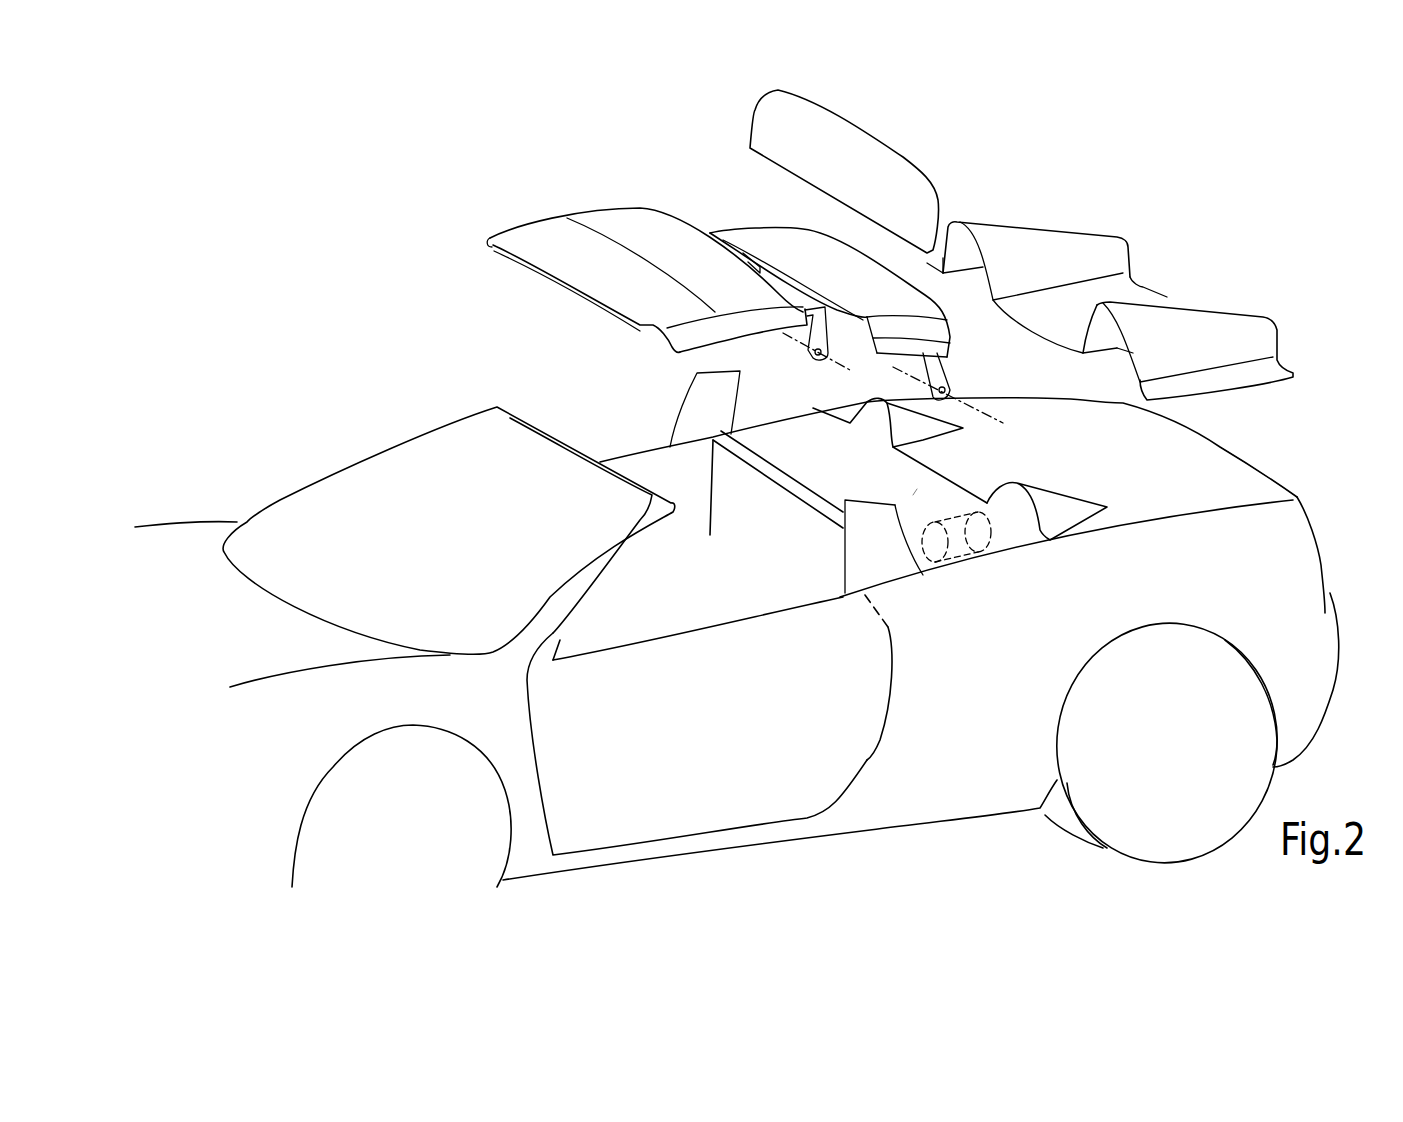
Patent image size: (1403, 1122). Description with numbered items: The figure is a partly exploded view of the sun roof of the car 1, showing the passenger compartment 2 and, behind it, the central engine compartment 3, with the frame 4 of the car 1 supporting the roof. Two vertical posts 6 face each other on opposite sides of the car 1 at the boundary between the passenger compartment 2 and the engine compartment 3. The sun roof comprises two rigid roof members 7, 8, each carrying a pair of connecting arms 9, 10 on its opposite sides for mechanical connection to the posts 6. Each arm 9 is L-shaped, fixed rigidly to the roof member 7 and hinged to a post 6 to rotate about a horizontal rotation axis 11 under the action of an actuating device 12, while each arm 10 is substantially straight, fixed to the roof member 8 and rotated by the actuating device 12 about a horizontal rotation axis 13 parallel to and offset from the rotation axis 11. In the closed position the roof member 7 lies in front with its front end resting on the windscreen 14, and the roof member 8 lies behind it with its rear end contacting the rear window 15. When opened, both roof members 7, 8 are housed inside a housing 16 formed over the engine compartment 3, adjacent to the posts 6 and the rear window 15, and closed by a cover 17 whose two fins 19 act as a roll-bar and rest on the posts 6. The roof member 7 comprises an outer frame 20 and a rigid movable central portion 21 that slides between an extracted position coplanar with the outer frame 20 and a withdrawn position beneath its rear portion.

The car 1 is at (337, 332).
The passenger compartment 2 is at (487, 350).
The central engine compartment 3 is at (1257, 425).
The frame 4 is at (935, 838).
The vertical posts 6 is at (697, 400).
The roof member 7 is at (622, 183).
The roof member 8 is at (770, 237).
The connecting arms 9 is at (813, 357).
The connecting arms 10 is at (937, 367).
The rotation axis 11 is at (840, 367).
The actuating device 12 is at (968, 548).
The rotation axis 13 is at (1003, 423).
The windscreen 14 is at (395, 463).
The rear window 15 is at (870, 147).
The housing 16 is at (915, 492).
The cover 17 is at (1170, 288).
The fins 19 is at (1040, 237).
The outer frame 20 is at (583, 213).
The central portion 21 is at (560, 277).